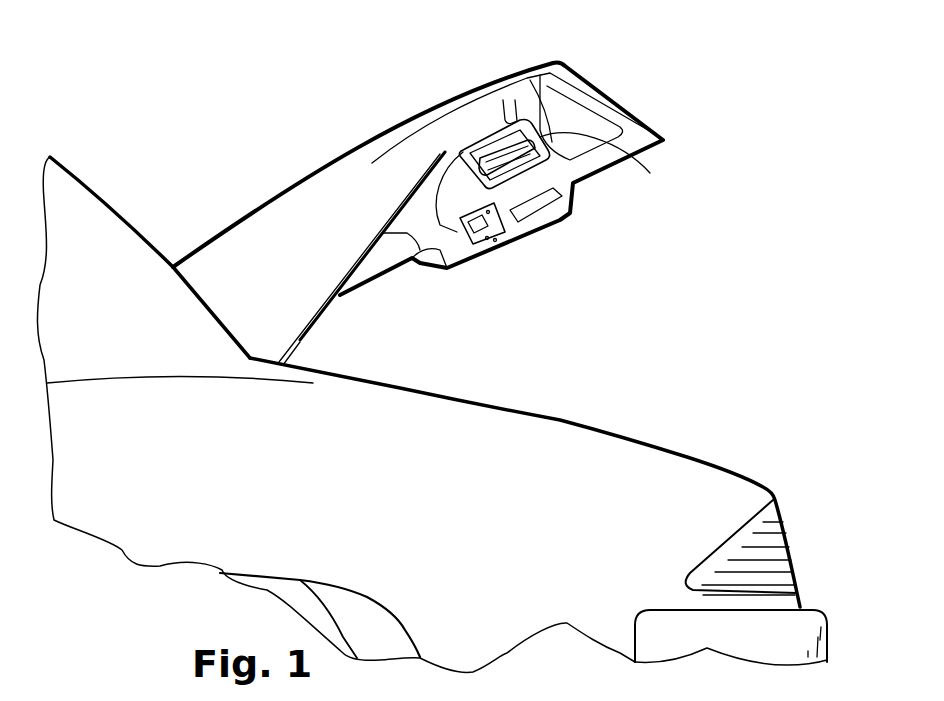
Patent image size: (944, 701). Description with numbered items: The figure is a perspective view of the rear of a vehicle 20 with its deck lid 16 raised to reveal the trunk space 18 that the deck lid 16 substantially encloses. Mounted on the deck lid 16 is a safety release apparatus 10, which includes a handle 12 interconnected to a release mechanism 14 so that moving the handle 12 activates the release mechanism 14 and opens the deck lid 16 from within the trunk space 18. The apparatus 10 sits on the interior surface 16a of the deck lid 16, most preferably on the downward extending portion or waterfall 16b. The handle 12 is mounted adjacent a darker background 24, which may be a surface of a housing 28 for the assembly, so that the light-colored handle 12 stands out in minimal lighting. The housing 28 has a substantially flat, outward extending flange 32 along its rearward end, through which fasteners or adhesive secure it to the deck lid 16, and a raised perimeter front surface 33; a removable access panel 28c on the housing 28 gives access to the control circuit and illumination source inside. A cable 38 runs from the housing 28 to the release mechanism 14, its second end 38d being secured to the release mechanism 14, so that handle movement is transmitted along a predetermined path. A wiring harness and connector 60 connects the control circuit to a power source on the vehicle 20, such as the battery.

The safety release apparatus 10 is at (562, 119).
The handle 12 is at (505, 222).
The release mechanism 14 is at (492, 222).
The deck lid 16 is at (365, 158).
The interior surface 16a is at (580, 82).
The waterfall 16b is at (433, 238).
The trunk space 18 is at (487, 388).
The vehicle 20 is at (587, 453).
The background 24 is at (517, 150).
The housing 28 is at (548, 158).
The removable access panel 28c is at (492, 143).
The flange 32 is at (609, 161).
The front surface 33 is at (520, 215).
The cable 38 is at (450, 228).
The second end 38d is at (463, 228).
The wiring harness and connector 60 is at (507, 117).